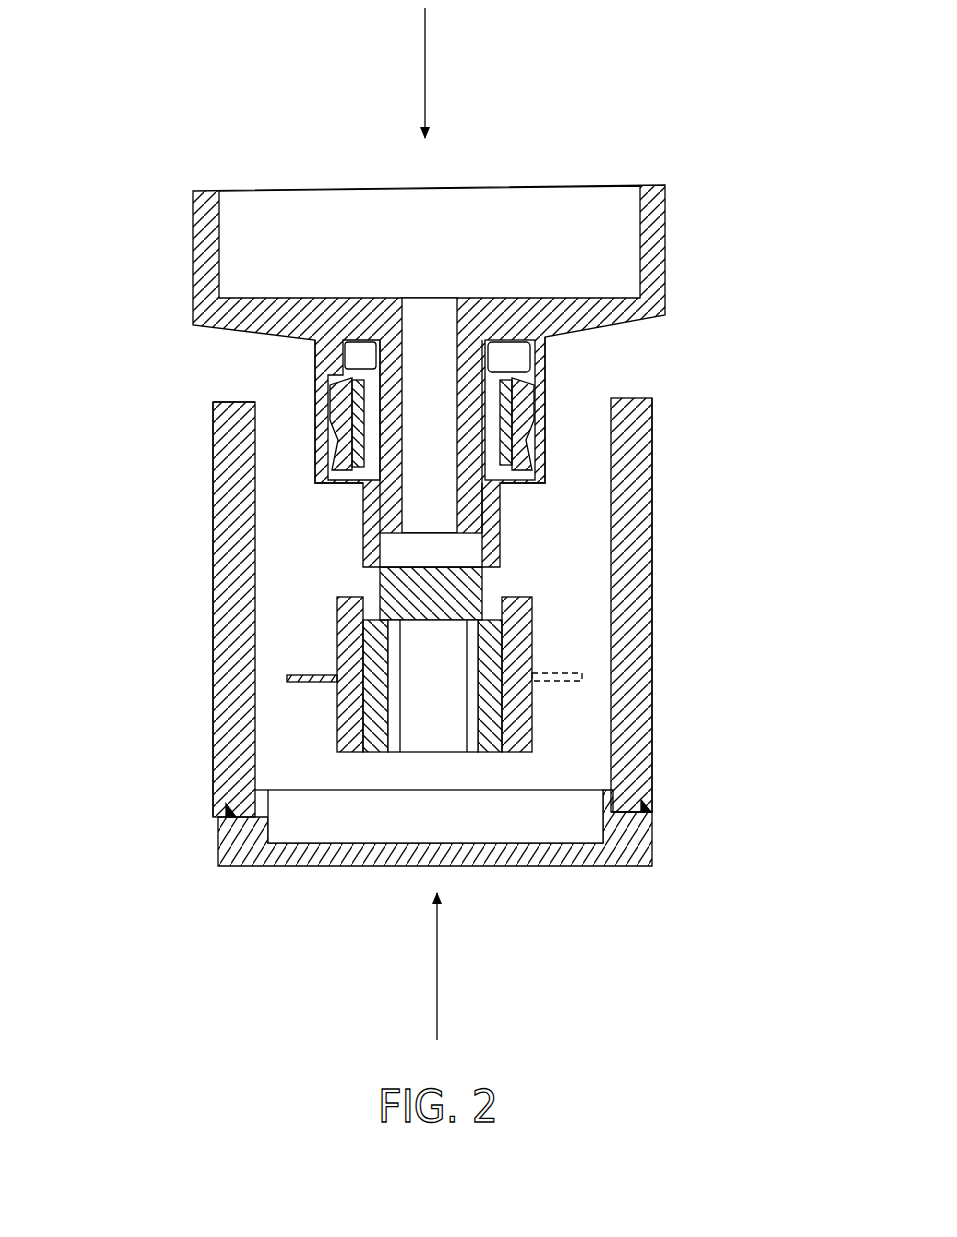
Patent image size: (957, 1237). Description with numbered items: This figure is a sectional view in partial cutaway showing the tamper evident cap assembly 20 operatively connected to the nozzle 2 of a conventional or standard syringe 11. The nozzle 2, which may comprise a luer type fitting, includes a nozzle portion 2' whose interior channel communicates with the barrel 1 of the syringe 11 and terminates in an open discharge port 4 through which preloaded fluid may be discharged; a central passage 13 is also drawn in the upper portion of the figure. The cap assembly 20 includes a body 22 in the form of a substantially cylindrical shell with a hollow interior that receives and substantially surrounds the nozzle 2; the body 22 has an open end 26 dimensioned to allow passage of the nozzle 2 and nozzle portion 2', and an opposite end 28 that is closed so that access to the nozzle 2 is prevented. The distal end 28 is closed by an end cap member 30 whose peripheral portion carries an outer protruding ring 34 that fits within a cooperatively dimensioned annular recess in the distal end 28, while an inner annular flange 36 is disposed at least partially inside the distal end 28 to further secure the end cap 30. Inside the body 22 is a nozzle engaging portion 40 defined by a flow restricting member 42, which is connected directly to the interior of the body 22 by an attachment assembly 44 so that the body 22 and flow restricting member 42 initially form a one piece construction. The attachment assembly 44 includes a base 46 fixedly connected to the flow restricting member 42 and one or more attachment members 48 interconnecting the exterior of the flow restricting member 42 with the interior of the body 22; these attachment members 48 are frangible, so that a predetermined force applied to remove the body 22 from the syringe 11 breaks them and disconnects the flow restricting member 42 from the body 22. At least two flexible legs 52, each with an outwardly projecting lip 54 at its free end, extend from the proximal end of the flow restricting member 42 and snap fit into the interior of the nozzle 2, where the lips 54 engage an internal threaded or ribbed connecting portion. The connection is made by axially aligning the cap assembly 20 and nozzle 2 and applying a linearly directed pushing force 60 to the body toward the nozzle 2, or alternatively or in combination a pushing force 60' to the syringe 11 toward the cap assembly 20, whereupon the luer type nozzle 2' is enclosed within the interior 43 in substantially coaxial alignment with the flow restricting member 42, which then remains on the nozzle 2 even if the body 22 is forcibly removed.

The barrel 1 is at (665, 225).
The nozzle 2 is at (514, 385).
The nozzle portion 2' is at (520, 519).
The discharge port 4 is at (432, 530).
The syringe 11 is at (700, 204).
The central bore 13 is at (427, 338).
The tamper evident cap assembly 20 is at (695, 498).
The body 22 is at (652, 577).
The open end 26 is at (270, 412).
The opposite end 28 is at (606, 796).
The end cap member 30 is at (618, 868).
The protruding ring 34 is at (226, 808).
The inner annular flange 36 is at (275, 801).
The nozzle engaging portion 40 is at (507, 500).
The flow restricting member 42 is at (366, 498).
The interior 43 is at (446, 562).
The attachment assembly 44 is at (552, 688).
The base 46 is at (352, 722).
The attachment member 48 is at (305, 672).
The leg 52 is at (522, 436).
The lip 54 is at (342, 395).
The pushing force 60 is at (510, 966).
The pushing force 60' is at (484, 73).